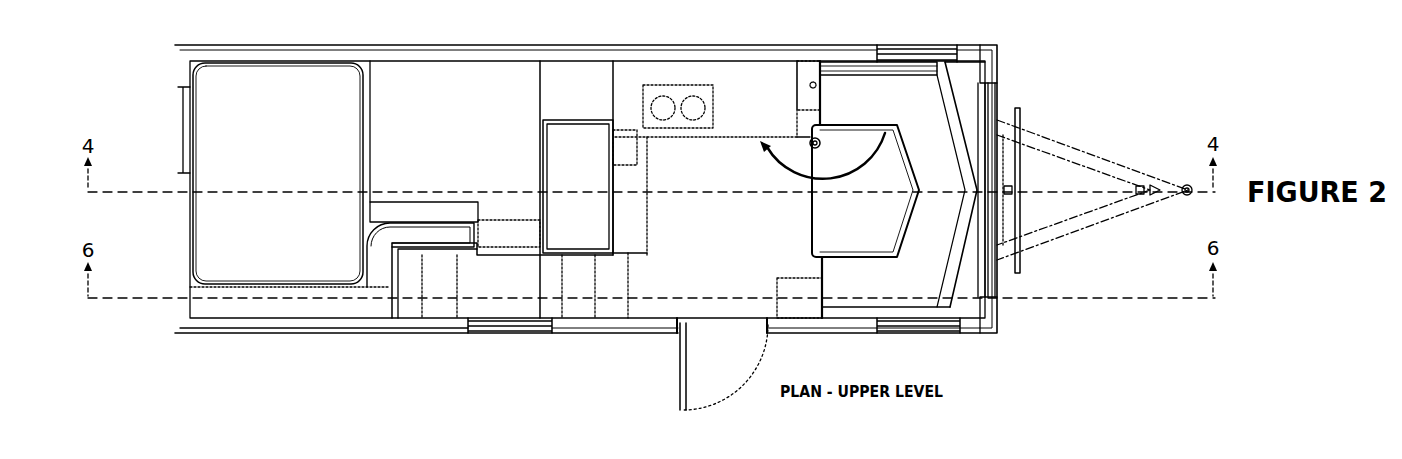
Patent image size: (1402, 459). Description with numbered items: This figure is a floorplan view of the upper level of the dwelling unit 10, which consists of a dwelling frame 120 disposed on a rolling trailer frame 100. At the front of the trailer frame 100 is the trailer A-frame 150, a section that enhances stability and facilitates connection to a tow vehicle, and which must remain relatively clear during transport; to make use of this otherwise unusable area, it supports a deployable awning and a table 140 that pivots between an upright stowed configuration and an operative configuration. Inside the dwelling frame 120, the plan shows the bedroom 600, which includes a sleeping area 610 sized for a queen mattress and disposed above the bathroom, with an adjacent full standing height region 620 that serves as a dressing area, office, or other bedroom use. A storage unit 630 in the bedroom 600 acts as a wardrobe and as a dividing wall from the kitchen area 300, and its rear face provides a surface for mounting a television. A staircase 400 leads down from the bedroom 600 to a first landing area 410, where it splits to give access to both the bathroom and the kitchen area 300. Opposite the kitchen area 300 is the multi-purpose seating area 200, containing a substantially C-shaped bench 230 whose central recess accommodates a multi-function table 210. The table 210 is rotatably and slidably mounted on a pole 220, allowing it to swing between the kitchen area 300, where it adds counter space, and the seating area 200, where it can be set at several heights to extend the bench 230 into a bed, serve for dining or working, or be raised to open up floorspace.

The dwelling unit 10 is at (1102, 83).
The rolling trailer frame 100 is at (1152, 168).
The dwelling frame 120 is at (582, 45).
The table 140 is at (1028, 175).
The trailer A-frame 150 is at (1070, 232).
The multi-purpose seating area 200 is at (887, 97).
The multi-function table 210 is at (873, 223).
The pole 220 is at (813, 140).
The bench 230 is at (933, 250).
The kitchen area 300 is at (710, 252).
The staircase 400 is at (583, 310).
The first landing area 410 is at (532, 291).
The bedroom 600 is at (427, 138).
The sleeping area 610 is at (303, 123).
The full standing height region 620 is at (488, 132).
The storage unit 630 is at (597, 176).